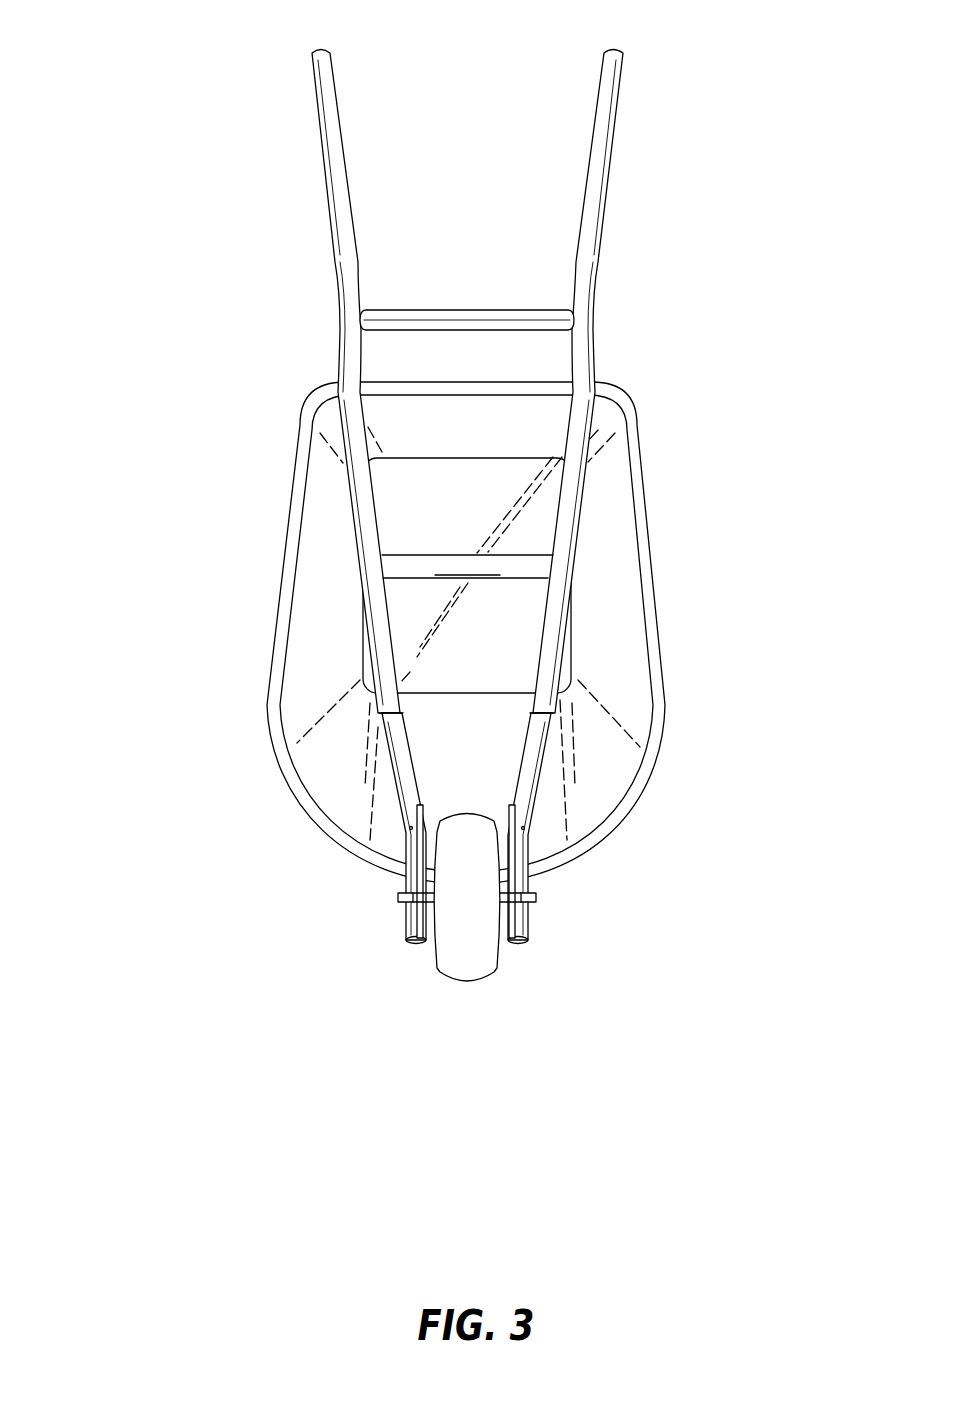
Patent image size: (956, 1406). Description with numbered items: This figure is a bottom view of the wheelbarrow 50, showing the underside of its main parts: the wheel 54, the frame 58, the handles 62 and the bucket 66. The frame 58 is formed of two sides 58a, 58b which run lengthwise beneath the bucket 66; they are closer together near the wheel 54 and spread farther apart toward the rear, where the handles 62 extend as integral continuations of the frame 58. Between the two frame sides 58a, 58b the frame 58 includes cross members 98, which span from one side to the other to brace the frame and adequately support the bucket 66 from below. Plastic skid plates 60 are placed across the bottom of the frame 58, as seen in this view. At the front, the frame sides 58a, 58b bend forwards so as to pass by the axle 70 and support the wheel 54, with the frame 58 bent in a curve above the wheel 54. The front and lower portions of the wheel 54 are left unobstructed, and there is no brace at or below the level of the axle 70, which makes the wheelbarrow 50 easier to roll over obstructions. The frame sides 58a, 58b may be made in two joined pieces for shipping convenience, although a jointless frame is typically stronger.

The wheelbarrow 50 is at (178, 228).
The wheel 54 is at (468, 917).
The frame 58 is at (592, 280).
The frame side 58a is at (373, 593).
The frame side 58b is at (558, 560).
The plastic skid plate 60 is at (577, 420).
The handle 62 is at (327, 112).
The bucket 66 is at (327, 743).
The axle 70 is at (397, 893).
The cross member 98 is at (462, 316).